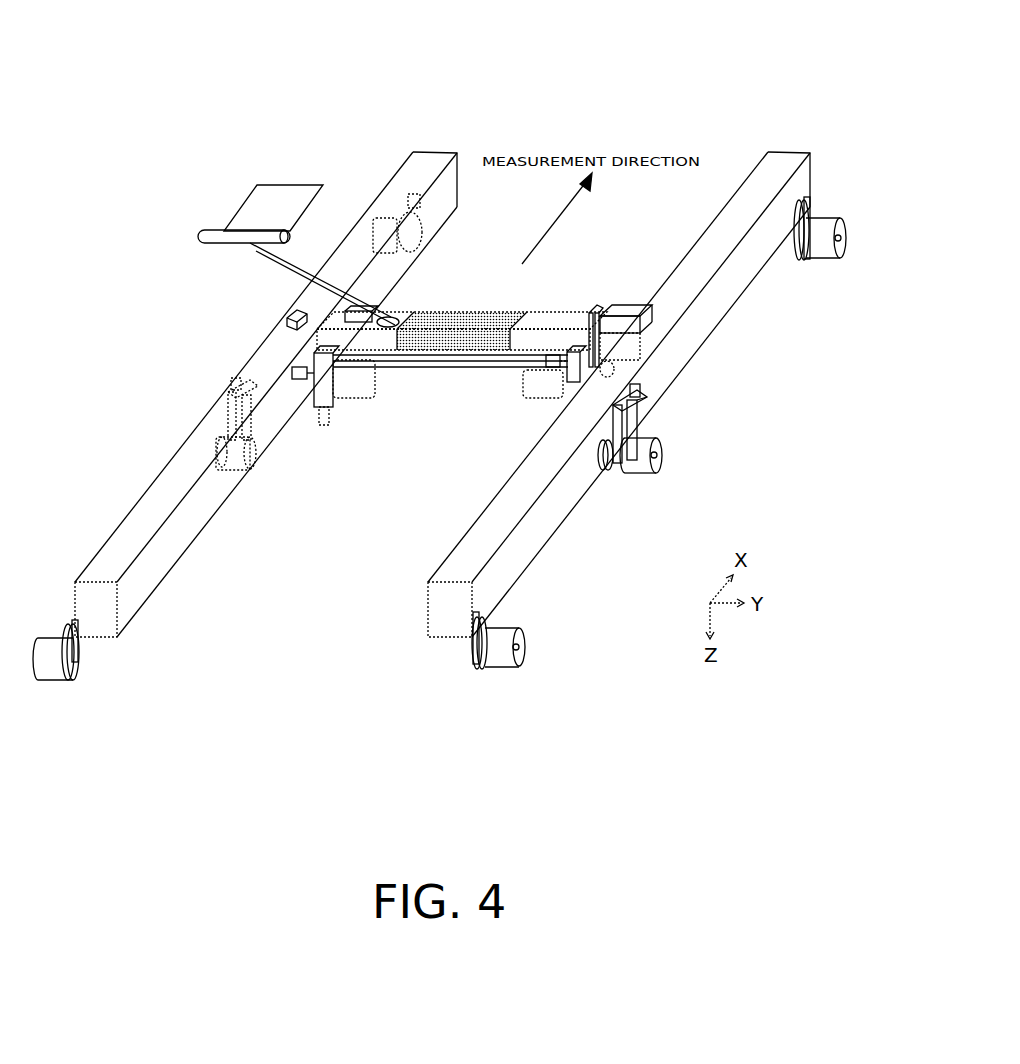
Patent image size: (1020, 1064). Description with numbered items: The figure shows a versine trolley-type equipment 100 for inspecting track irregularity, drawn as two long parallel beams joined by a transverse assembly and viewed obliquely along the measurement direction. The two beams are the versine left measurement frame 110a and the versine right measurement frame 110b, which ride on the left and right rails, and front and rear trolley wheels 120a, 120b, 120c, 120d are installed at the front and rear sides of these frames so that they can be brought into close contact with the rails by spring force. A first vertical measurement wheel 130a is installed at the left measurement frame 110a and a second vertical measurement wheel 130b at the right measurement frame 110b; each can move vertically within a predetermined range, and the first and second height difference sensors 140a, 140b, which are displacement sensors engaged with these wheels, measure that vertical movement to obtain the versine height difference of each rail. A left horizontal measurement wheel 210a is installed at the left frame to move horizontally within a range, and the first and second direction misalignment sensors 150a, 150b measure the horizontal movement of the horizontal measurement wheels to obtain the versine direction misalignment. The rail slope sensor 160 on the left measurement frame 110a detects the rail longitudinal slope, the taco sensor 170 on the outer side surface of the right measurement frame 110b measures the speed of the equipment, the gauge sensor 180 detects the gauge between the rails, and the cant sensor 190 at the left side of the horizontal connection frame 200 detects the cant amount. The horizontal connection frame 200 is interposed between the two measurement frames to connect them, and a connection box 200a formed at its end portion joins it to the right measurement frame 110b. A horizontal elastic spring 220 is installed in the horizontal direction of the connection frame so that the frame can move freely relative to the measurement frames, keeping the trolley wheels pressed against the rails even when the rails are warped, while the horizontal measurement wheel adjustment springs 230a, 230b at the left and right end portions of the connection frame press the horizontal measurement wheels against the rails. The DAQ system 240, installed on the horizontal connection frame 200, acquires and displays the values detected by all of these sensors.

The versine trolley-type equipment for inspecting track irregularity 100 is at (147, 44).
The versine left measurement frame 110a is at (137, 517).
The versine right measurement frame 110b is at (477, 532).
The trolley wheel 120a is at (390, 215).
The trolley wheel 120b is at (825, 250).
The trolley wheel 120c is at (50, 672).
The trolley wheel 120d is at (500, 668).
The first vertical measurement wheel 130a is at (223, 472).
The second vertical measurement wheel 130b is at (641, 475).
The first height difference sensor 140a is at (233, 388).
The second height difference sensor 140b is at (641, 393).
The first direction misalignment sensor 150a is at (297, 370).
The second direction misalignment sensor 150b is at (614, 368).
The rail slope sensor 160 is at (292, 312).
The taco sensor 170 is at (614, 472).
The gauge sensor 180 is at (549, 350).
The cant sensor 190 is at (370, 327).
The horizontal connection frame 200 is at (483, 312).
The connection box 200a is at (618, 317).
The left horizontal measurement wheel 210a is at (324, 426).
The horizontal elastic spring 220 is at (379, 350).
The horizontal measurement wheel adjustment spring 230a is at (357, 400).
The horizontal measurement wheel adjustment spring 230b is at (523, 389).
The data acquisition (DAQ) system 240 is at (247, 210).